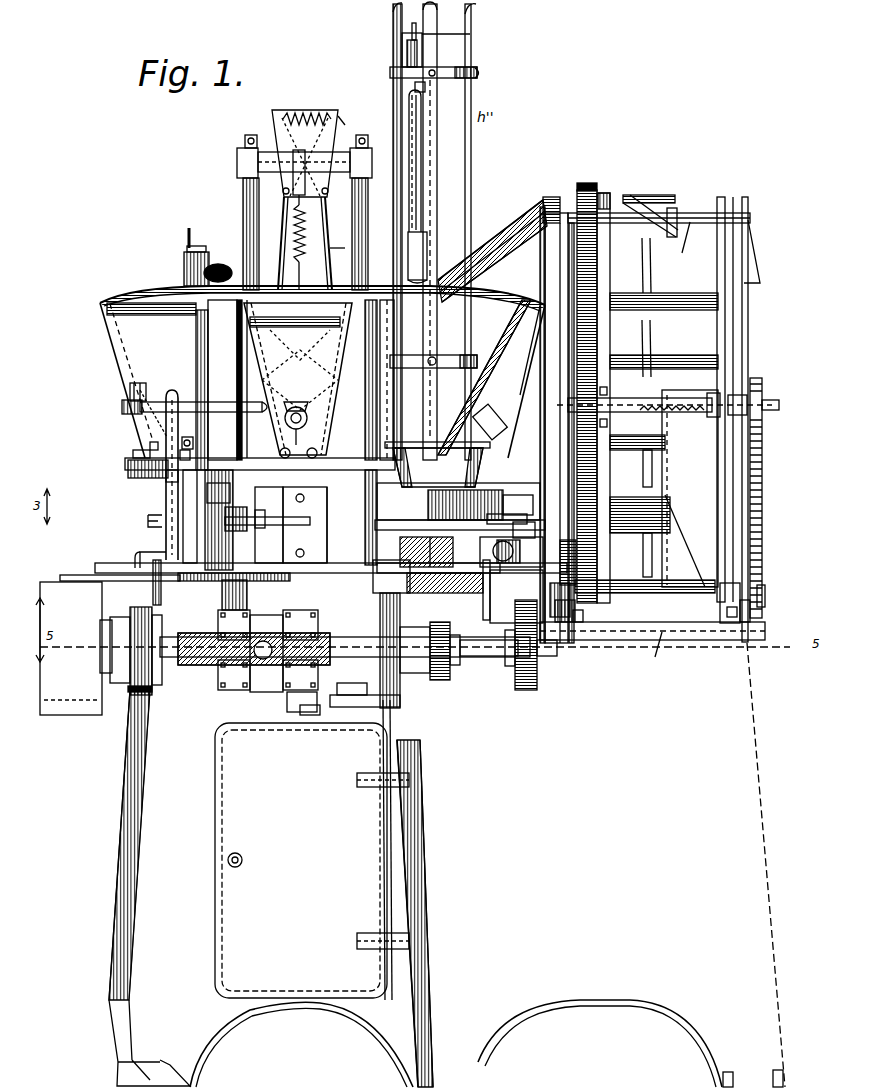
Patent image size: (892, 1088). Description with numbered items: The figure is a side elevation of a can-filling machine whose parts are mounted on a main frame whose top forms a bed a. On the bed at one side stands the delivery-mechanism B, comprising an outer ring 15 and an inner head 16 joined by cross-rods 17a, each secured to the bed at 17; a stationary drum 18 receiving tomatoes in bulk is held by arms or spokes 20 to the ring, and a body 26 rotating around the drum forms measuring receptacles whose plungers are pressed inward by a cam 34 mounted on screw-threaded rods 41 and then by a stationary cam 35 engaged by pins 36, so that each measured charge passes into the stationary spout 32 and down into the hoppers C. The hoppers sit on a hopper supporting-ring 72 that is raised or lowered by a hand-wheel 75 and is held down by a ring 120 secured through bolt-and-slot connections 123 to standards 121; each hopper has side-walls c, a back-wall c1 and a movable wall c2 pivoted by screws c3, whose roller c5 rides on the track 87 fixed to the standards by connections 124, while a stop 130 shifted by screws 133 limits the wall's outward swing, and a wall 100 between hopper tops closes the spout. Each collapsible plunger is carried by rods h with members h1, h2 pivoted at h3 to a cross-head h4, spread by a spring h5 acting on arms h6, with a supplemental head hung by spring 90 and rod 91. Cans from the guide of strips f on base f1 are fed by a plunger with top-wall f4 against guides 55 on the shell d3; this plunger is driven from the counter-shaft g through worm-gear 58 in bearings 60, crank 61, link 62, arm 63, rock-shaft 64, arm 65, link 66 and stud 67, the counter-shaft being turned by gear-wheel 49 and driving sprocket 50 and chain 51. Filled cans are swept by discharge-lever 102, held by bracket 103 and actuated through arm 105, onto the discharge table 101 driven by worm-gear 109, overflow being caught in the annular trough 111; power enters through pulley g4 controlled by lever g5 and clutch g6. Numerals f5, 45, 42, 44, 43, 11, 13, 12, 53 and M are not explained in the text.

The plunger-rods h is at (240, 348).
The plunger member h1 is at (280, 218).
The plunger member h2 is at (332, 248).
The pivot h3 is at (327, 194).
The cross-head h4 is at (240, 155).
The spring h5 is at (301, 110).
The arms h6 is at (334, 132).
The spring 90 is at (306, 234).
The rod 91 is at (298, 377).
The hand-wheel 75 is at (226, 262).
The wall 100 is at (160, 292).
The strips f is at (437, 200).
The base f1 is at (487, 485).
The top-wall f4 is at (442, 498).
The block f5 is at (515, 494).
The stationary spout 32 is at (492, 251).
The inner head 16 is at (551, 196).
The delivery-mechanism B is at (652, 416).
The gear column 45 is at (592, 270).
The pins 36 is at (618, 204).
The stationary cam 35 is at (658, 203).
The cross-rods 17a is at (695, 243).
The arms or spokes 20 is at (758, 260).
The outer ring 15 is at (735, 318).
The stationary drum 18 is at (748, 350).
The screw-threaded rods 41 is at (668, 412).
The bearing 42 is at (762, 394).
The nut 44 is at (770, 414).
The rack 43 is at (764, 478).
The cam 34 is at (690, 488).
The body 26 is at (682, 541).
The leg 11 is at (704, 642).
The top or bed a is at (651, 652).
The securing point 17 is at (580, 622).
The hopper supporting-ring 72 is at (780, 584).
The block 13 is at (779, 612).
The hoppers C is at (322, 380).
The side-walls c is at (496, 390).
The back-wall c1 is at (526, 350).
The movable wall c2 is at (485, 358).
The screws c3 is at (273, 412).
The roller c5 is at (498, 425).
The valve 12 is at (296, 412).
The track or guide 87 is at (122, 409).
The standards 121 is at (164, 500).
The bolt-and-slot connections 123 is at (153, 481).
The ring 120 is at (128, 470).
The screws 133 is at (133, 453).
The stop 130 is at (150, 445).
The bolt-and-slot connections 124 is at (142, 413).
The stops or guides 55 is at (272, 509).
The plate 53 is at (305, 525).
The cylindrical shell d3 is at (296, 525).
The bracket 103 is at (226, 540).
The arm 105 is at (222, 562).
The discharge table 101 is at (122, 565).
The annular trough 111 is at (100, 575).
The discharge-lever 102 is at (250, 572).
The worm-gear 109 is at (290, 568).
The arm 63 is at (500, 520).
The link 66 is at (536, 528).
The stud 67 is at (472, 555).
The pulley g4 is at (76, 648).
The lever g5 is at (125, 630).
The clutch g6 is at (112, 667).
The counter-shaft g is at (415, 637).
The worm-gear 58 is at (300, 628).
The bearings 60 is at (290, 700).
The crank 61 is at (300, 710).
The link 62 is at (330, 707).
The rock-shaft 64 is at (448, 672).
The arm 65 is at (400, 702).
The gear-wheel 49 is at (510, 660).
The sprocket-wheel 50 is at (538, 652).
The chain 51 is at (540, 672).
The machine frame M is at (421, 823).